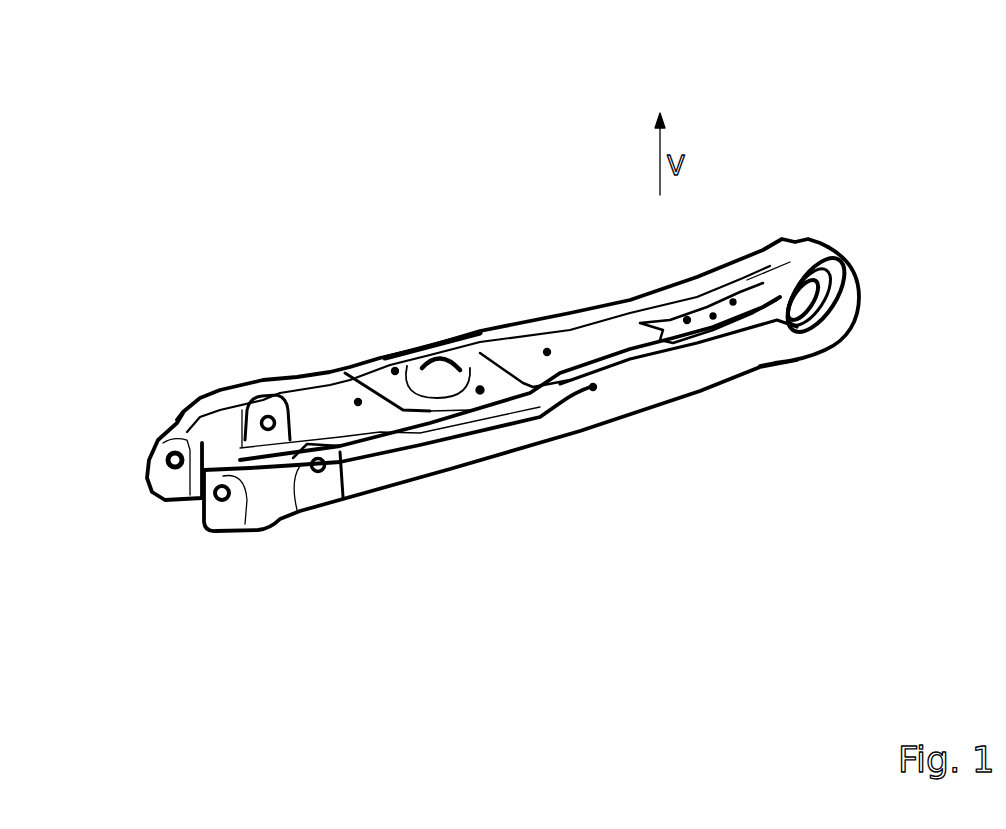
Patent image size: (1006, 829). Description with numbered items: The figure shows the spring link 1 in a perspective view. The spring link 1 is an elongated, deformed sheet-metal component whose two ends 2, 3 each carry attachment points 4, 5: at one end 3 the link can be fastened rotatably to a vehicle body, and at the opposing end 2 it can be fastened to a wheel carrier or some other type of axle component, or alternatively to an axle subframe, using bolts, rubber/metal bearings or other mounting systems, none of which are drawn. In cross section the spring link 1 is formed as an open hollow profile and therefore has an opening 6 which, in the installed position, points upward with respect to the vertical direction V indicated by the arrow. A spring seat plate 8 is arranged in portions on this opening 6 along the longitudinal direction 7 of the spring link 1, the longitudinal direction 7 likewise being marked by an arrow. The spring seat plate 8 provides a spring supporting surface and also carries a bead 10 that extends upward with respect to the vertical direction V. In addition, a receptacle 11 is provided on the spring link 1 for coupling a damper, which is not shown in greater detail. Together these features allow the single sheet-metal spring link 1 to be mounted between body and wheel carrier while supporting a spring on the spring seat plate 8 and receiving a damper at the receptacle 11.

The spring link 1 is at (877, 117).
The end 2 is at (907, 298).
The end 3 is at (134, 493).
The attachment point 4 is at (810, 300).
The attachment point 5 is at (224, 500).
The opening 6 is at (603, 335).
The longitudinal direction 7 is at (666, 554).
The spring seat plate 8 is at (483, 382).
The bead 10 is at (423, 375).
The receptacle 11 is at (319, 460).